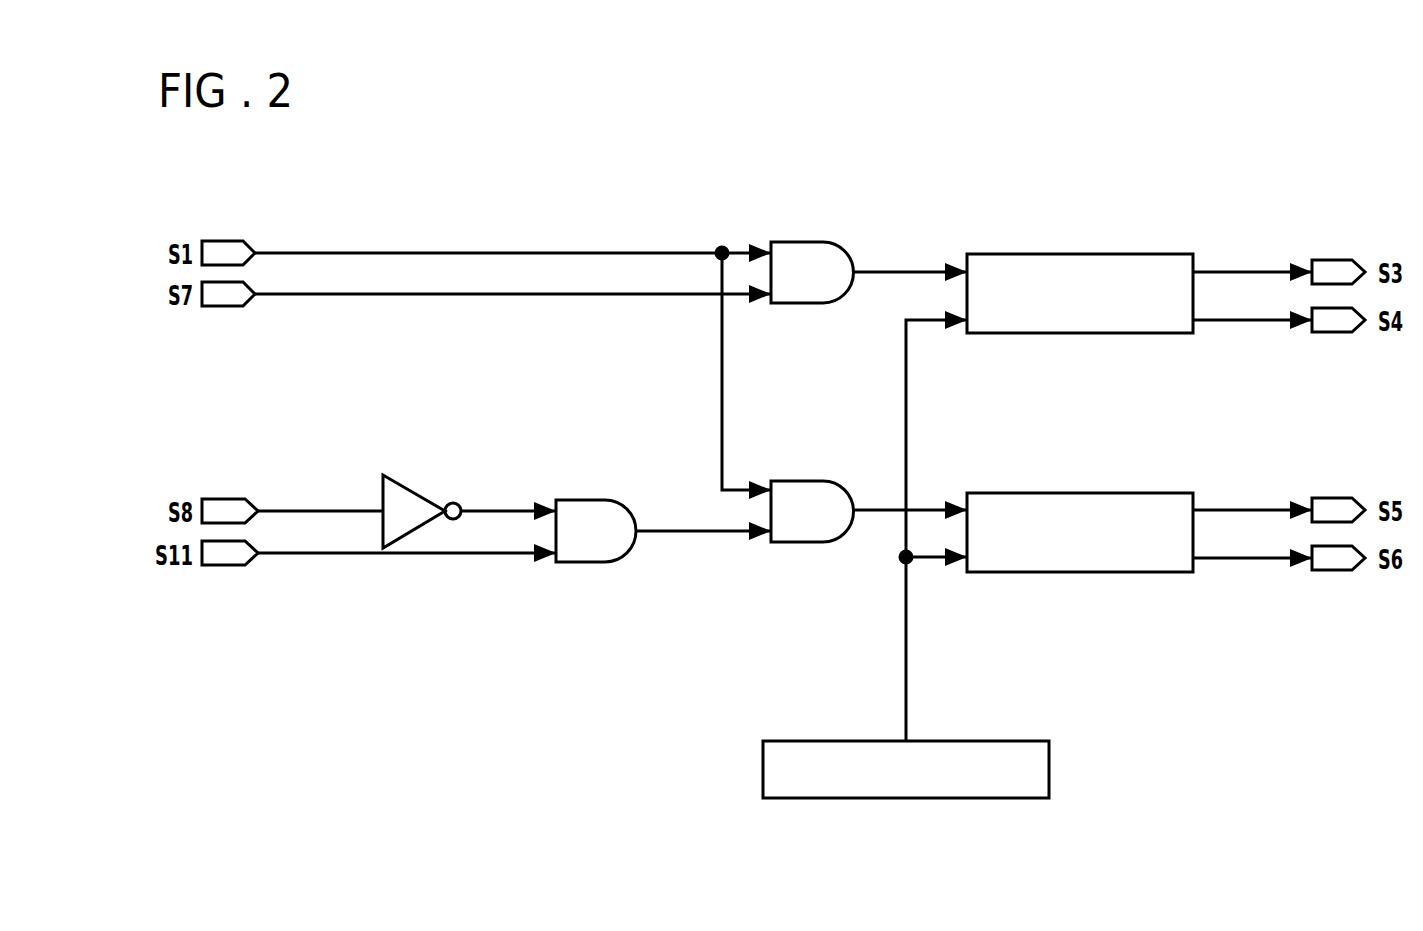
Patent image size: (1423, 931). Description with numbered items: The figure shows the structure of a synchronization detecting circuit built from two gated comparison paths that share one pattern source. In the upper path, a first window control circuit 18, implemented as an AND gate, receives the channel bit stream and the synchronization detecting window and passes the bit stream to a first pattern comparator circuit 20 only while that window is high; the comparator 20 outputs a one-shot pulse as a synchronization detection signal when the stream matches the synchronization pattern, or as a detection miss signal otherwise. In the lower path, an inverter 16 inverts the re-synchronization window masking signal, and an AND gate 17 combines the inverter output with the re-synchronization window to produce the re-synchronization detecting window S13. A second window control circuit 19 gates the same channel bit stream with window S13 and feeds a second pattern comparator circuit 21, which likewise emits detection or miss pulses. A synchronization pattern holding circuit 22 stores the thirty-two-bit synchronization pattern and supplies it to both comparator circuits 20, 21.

The inverter 16 is at (400, 482).
The AND gate 17 is at (598, 500).
The first window control circuit 18 is at (786, 242).
The second window control circuit 19 is at (786, 481).
The first pattern comparator circuit 20 is at (1106, 254).
The second pattern comparator circuit 21 is at (1106, 493).
The synchronization pattern holding circuit 22 is at (944, 741).
The re-synchronization detecting window S13 is at (695, 535).